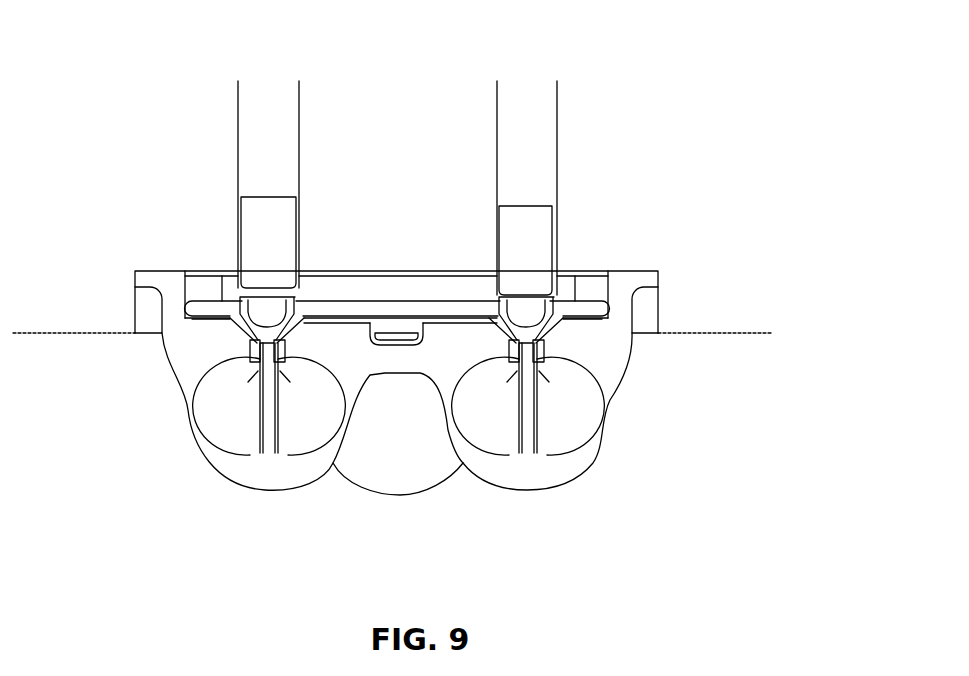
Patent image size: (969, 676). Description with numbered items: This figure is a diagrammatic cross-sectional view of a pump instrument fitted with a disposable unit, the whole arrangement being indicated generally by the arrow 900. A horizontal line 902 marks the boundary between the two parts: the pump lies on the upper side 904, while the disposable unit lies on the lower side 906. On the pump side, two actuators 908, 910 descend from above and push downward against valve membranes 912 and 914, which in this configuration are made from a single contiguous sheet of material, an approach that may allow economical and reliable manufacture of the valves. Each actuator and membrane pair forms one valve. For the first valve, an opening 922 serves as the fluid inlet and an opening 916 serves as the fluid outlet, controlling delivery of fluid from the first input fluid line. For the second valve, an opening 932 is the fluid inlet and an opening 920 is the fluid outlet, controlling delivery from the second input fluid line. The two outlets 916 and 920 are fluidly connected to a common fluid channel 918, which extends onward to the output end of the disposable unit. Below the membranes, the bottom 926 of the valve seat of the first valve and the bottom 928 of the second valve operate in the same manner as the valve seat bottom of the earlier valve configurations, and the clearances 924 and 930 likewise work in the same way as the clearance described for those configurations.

The connector assembly 900 is at (612, 98).
The line 902 is at (417, 332).
The side 904 is at (735, 282).
The side 906 is at (733, 375).
The actuator 908 is at (262, 215).
The actuator 910 is at (527, 235).
The valve membrane 912 is at (262, 288).
The valve membrane 914 is at (533, 307).
The opening 916 is at (322, 318).
The fluid channel 918 is at (398, 323).
The opening 920 is at (487, 318).
The opening 922 is at (208, 317).
The clearance 924 is at (248, 336).
The bottom 926 is at (263, 418).
The bottom 928 is at (527, 405).
The clearance 930 is at (545, 333).
The opening 932 is at (577, 317).